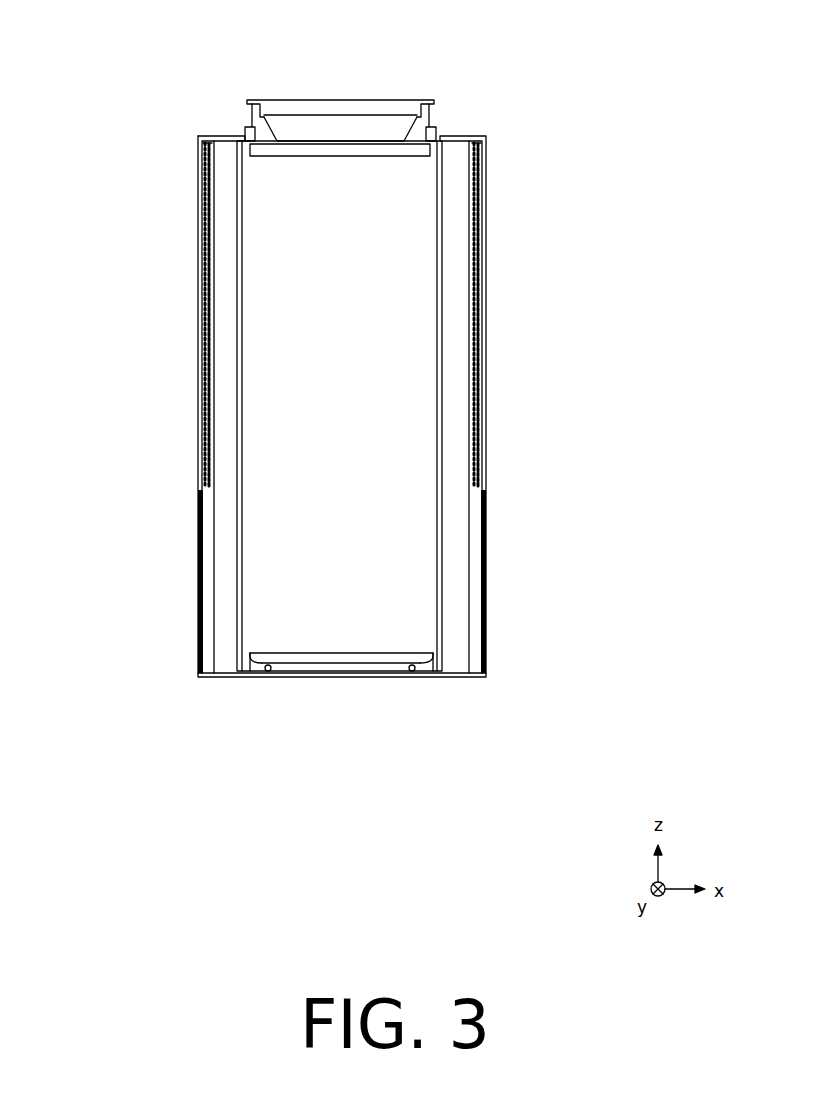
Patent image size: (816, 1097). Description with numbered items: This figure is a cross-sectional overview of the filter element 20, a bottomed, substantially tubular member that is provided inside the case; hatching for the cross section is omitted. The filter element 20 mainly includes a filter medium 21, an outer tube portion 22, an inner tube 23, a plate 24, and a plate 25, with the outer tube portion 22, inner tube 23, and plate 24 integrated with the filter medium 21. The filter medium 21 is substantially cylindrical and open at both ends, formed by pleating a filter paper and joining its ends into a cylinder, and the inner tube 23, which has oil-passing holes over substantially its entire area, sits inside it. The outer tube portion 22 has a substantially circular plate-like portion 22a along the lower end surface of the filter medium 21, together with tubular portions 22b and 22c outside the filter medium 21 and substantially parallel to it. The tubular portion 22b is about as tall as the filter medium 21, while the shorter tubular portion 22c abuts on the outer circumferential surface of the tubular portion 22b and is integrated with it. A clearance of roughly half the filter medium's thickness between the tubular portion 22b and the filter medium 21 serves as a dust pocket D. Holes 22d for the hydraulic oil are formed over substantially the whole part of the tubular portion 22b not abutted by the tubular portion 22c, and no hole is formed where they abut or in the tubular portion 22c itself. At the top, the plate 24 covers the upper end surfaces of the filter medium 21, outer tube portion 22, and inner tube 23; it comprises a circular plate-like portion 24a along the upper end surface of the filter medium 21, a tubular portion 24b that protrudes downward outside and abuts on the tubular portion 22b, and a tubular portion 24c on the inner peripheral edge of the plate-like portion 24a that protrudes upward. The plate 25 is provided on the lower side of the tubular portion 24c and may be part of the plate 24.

The filter element 20 is at (555, 26).
The filter medium 21 is at (450, 433).
The outer tube portion 22 is at (622, 553).
The plate-like portion 22a is at (450, 680).
The tubular portion 22b is at (483, 455).
The tubular portion 22c is at (487, 593).
The holes 22d is at (200, 285).
The inner tube 23 is at (438, 357).
The plate 24 is at (582, 100).
The plate-like portion 24a is at (447, 148).
The tubular portion 24b is at (443, 137).
The tubular portion 24c is at (437, 102).
The plate 25 is at (252, 133).
The dust pocket D is at (473, 558).